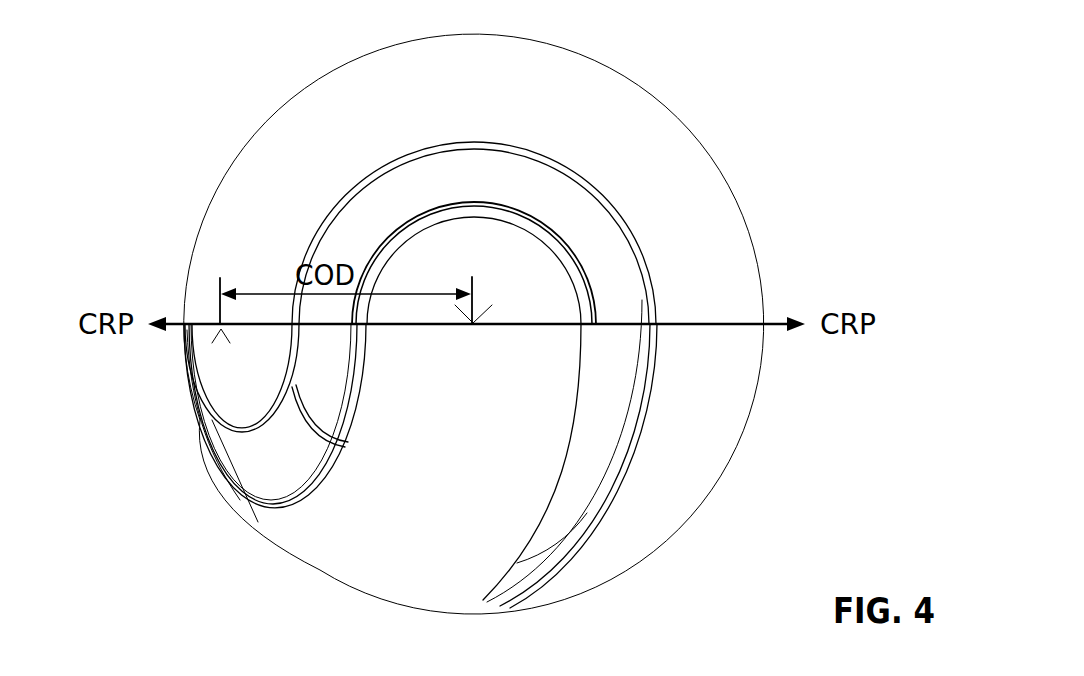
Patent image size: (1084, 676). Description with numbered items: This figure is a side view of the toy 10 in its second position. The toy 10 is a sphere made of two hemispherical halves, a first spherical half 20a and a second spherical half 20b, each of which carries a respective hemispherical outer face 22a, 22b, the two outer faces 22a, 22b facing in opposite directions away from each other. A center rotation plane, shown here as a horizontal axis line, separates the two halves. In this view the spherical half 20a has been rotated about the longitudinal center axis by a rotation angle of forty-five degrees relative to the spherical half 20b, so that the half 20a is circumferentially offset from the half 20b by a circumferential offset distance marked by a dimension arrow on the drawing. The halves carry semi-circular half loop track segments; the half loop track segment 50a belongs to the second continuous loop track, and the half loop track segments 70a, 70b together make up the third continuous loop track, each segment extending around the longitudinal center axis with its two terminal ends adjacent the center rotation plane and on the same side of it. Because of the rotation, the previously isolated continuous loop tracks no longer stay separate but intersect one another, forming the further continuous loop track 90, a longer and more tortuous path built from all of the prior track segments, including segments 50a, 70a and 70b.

The toy 10 is at (146, 93).
The spherical half 20a is at (199, 553).
The spherical half 20b is at (764, 94).
The spherical half outer face 22a is at (221, 496).
The spherical half outer face 22b is at (716, 149).
The half loop track segment 50a is at (617, 410).
The half loop track segment 70a is at (266, 433).
The half loop track segment 70b is at (378, 207).
The continuous loop track 90 is at (607, 262).